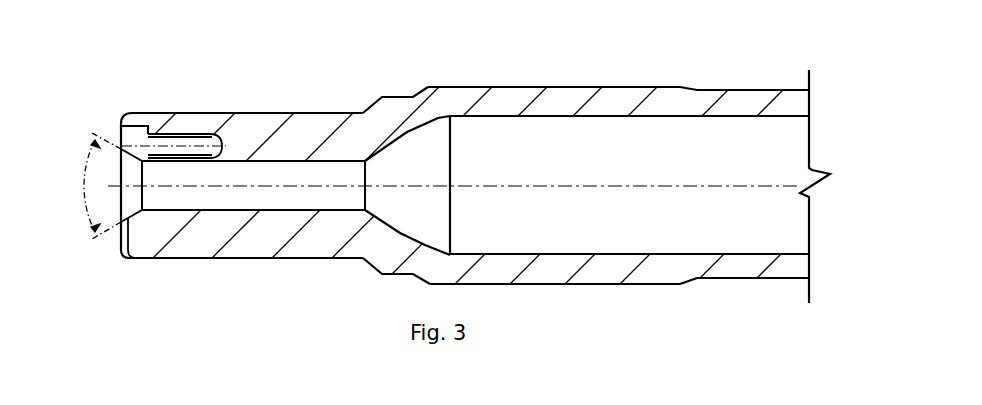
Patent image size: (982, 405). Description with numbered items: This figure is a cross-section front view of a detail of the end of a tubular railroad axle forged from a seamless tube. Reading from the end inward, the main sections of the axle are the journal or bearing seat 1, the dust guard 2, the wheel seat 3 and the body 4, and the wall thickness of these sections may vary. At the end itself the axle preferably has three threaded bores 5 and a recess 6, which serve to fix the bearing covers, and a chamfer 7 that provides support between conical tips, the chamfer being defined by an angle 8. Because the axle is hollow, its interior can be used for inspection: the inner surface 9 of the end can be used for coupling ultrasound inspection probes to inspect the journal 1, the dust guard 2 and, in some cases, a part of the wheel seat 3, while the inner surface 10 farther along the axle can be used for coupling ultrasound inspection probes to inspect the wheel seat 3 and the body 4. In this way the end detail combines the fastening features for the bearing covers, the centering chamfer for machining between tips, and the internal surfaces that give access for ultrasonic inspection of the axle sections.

The journal 1 is at (257, 113).
The dust guard 2 is at (393, 97).
The wheel seat 3 is at (518, 87).
The body 4 is at (757, 90).
The threaded bores 5 is at (178, 134).
The recess 6 is at (127, 126).
The chamfer 7 is at (130, 258).
The angle 8 is at (88, 186).
The inner surface 9 is at (232, 212).
The inner surface 10 is at (745, 254).